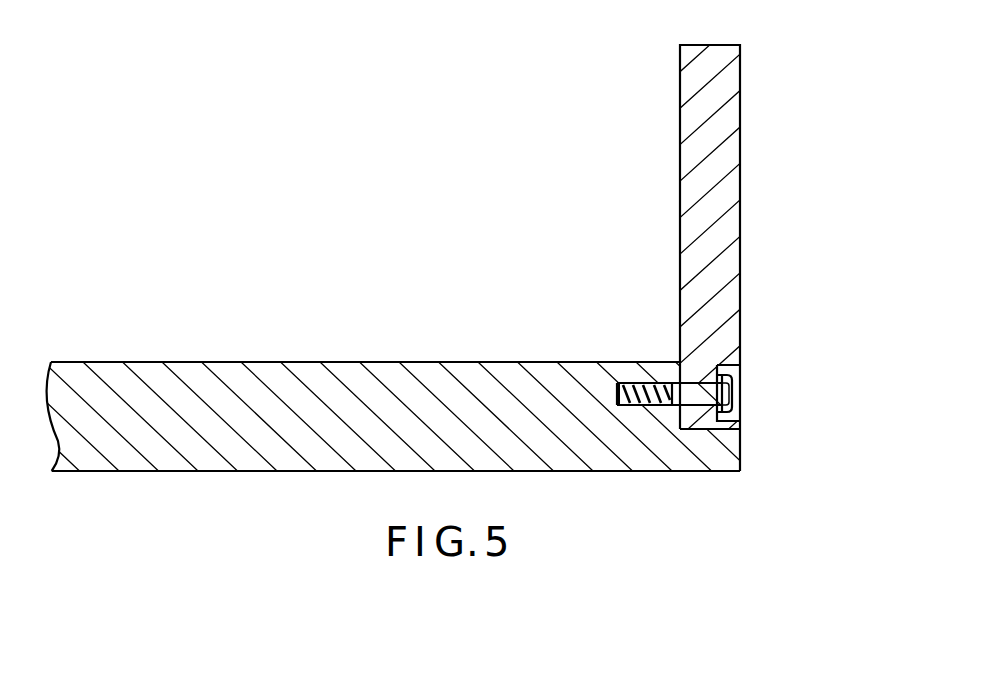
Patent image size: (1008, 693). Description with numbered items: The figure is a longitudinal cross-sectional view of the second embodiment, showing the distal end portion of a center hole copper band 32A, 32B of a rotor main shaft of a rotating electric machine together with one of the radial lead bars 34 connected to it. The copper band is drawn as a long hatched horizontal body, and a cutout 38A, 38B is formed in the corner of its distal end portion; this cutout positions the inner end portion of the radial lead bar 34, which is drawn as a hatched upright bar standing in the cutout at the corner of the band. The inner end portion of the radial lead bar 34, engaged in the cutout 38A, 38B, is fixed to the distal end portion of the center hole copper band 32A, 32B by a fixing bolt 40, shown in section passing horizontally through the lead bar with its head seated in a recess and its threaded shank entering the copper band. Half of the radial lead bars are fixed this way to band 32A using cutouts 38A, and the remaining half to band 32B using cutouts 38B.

The center hole copper band 32A is at (365, 362).
The center hole copper band 32B is at (395, 381).
The radial lead bar 34 is at (740, 146).
The cutout 38A is at (729, 427).
The cutout 38B is at (794, 405).
The fixing bolt 40 is at (732, 392).